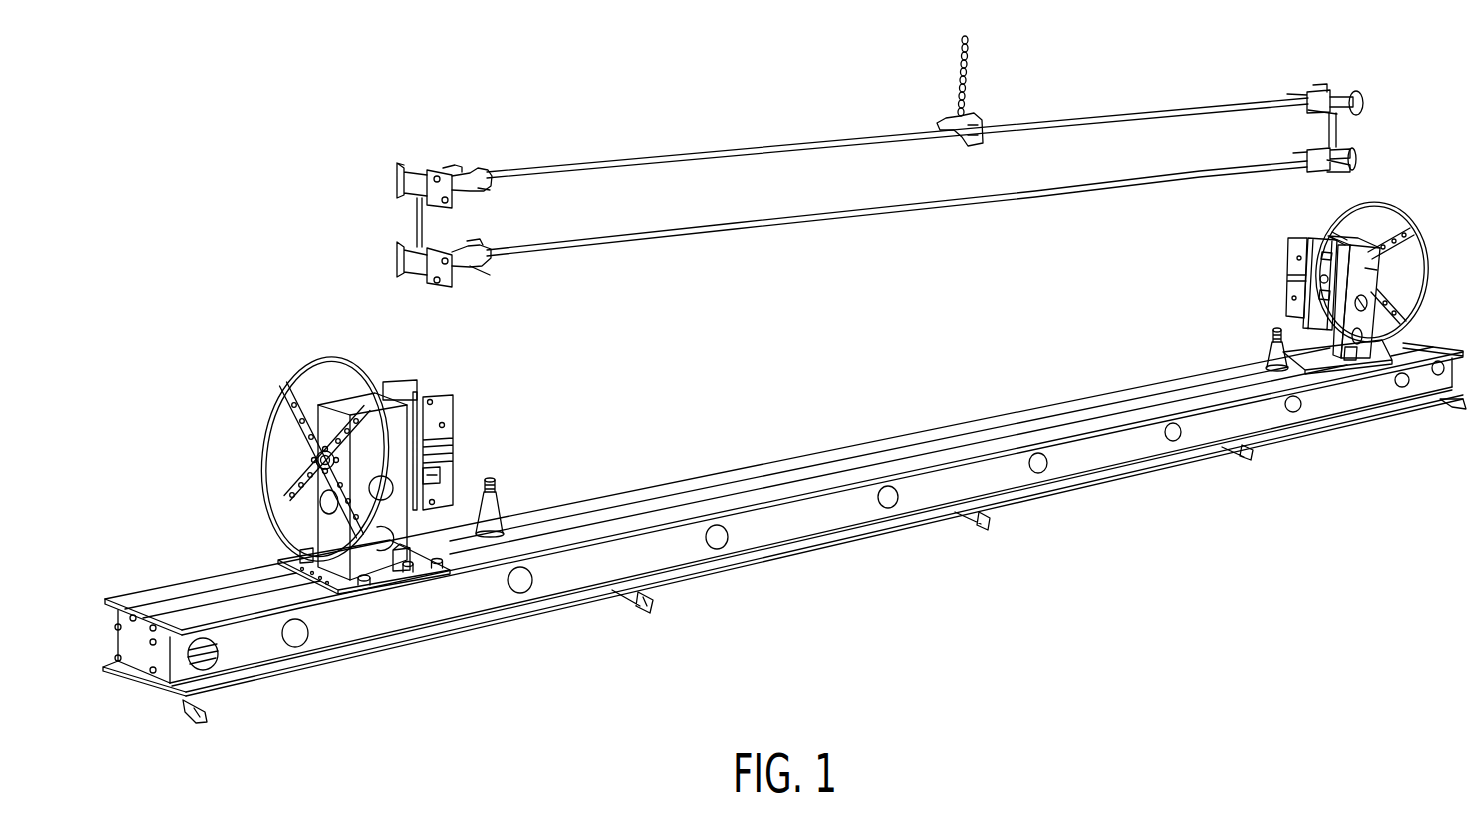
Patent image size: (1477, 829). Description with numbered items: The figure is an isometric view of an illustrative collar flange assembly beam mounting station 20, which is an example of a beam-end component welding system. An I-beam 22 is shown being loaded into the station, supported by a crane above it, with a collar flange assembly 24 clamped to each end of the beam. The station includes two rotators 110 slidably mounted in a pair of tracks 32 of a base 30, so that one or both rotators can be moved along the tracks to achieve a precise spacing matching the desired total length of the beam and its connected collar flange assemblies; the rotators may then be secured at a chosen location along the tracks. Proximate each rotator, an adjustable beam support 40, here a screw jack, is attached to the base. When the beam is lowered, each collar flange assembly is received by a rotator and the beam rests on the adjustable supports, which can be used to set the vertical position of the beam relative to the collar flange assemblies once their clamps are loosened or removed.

The collar flange assembly beam mounting station 20 is at (288, 296).
The I-beam 22 is at (1068, 186).
The collar flange assembly 24 is at (412, 158).
The base 30 is at (1113, 476).
The tracks 32 is at (914, 458).
The adjustable beam support 40 is at (490, 479).
The rotators 110 is at (238, 436).